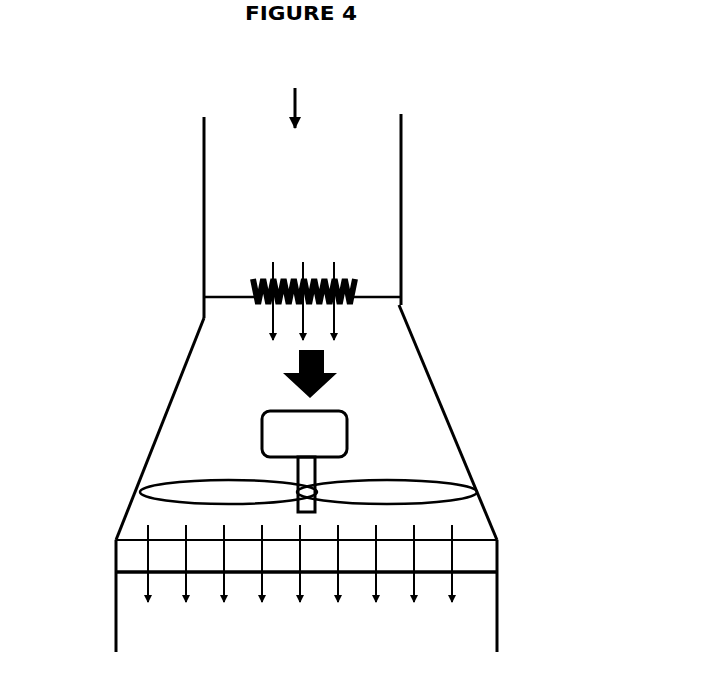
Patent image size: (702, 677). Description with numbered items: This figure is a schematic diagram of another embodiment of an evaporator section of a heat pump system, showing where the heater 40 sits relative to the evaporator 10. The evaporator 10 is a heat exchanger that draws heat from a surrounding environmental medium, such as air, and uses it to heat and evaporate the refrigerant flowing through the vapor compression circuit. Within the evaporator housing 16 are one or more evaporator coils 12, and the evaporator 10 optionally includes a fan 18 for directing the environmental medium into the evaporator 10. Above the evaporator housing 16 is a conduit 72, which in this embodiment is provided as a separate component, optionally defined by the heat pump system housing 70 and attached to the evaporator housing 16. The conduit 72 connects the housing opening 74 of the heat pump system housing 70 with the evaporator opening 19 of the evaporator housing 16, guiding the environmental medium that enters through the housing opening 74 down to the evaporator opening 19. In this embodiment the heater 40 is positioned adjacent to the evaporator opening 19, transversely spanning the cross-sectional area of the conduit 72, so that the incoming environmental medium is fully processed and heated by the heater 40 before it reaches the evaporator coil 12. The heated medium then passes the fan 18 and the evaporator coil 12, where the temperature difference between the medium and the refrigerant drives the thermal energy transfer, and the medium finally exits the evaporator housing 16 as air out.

The evaporator 10 is at (124, 355).
The evaporator coil 12 is at (497, 553).
The evaporator housing 16 is at (447, 408).
The fan 18 is at (262, 434).
The evaporator opening 19 is at (237, 284).
The heater 40 is at (355, 284).
The heat pump system housing 70 is at (204, 167).
The conduit 72 is at (380, 162).
The housing opening 74 is at (292, 92).